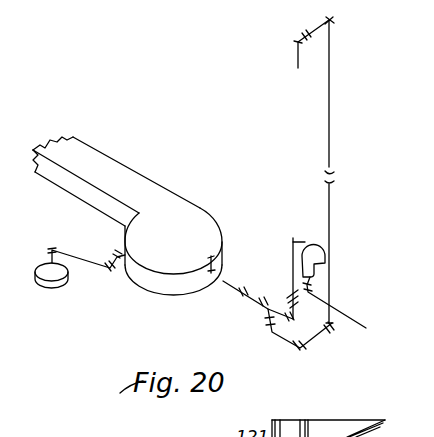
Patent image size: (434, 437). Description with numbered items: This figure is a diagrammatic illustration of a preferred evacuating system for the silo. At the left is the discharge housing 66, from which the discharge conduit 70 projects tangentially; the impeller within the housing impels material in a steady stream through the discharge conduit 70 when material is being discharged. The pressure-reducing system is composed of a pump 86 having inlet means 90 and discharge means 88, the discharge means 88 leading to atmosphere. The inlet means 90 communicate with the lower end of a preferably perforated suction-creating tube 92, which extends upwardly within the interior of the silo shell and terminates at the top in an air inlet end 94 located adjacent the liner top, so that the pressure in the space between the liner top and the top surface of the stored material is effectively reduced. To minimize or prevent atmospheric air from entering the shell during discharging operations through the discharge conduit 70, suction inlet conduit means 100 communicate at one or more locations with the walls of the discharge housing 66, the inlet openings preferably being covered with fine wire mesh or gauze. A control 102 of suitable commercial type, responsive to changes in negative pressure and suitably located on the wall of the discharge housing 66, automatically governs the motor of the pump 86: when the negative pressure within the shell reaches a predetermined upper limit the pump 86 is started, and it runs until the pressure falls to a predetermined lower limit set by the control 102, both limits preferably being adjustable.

The discharge housing 66 is at (152, 283).
The discharge conduit 70 is at (114, 163).
The pump 86 is at (318, 257).
The discharge means 88 is at (352, 312).
The inlet means 90 is at (308, 243).
The suction-creating tube 92 is at (329, 115).
The air inlet end 94 is at (297, 58).
The suction inlet conduit means 100 is at (223, 284).
The control 102 is at (52, 289).